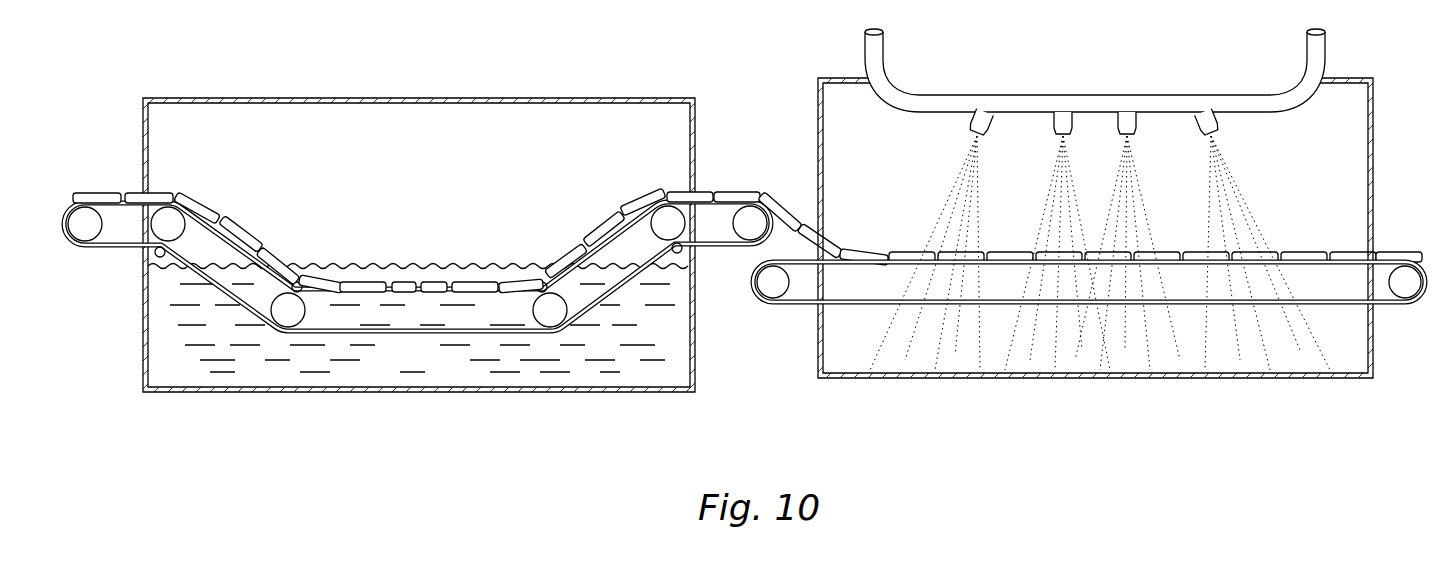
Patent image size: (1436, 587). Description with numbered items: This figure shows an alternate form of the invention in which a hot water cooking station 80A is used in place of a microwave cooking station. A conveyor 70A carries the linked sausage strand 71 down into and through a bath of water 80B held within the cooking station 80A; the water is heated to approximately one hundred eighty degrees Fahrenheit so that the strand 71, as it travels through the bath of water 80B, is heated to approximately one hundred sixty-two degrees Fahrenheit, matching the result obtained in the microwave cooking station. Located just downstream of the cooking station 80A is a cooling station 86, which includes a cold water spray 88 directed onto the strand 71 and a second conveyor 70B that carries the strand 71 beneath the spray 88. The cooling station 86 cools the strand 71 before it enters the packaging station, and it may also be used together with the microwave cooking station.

The hot water cooking station 80A is at (522, 77).
The bath of water 80B is at (526, 372).
The conveyor 70A is at (76, 246).
The linked sausage strand 71 is at (737, 192).
The cooling station 86 is at (805, 85).
The cold water spray 88 is at (945, 153).
The conveyor 70B is at (793, 303).